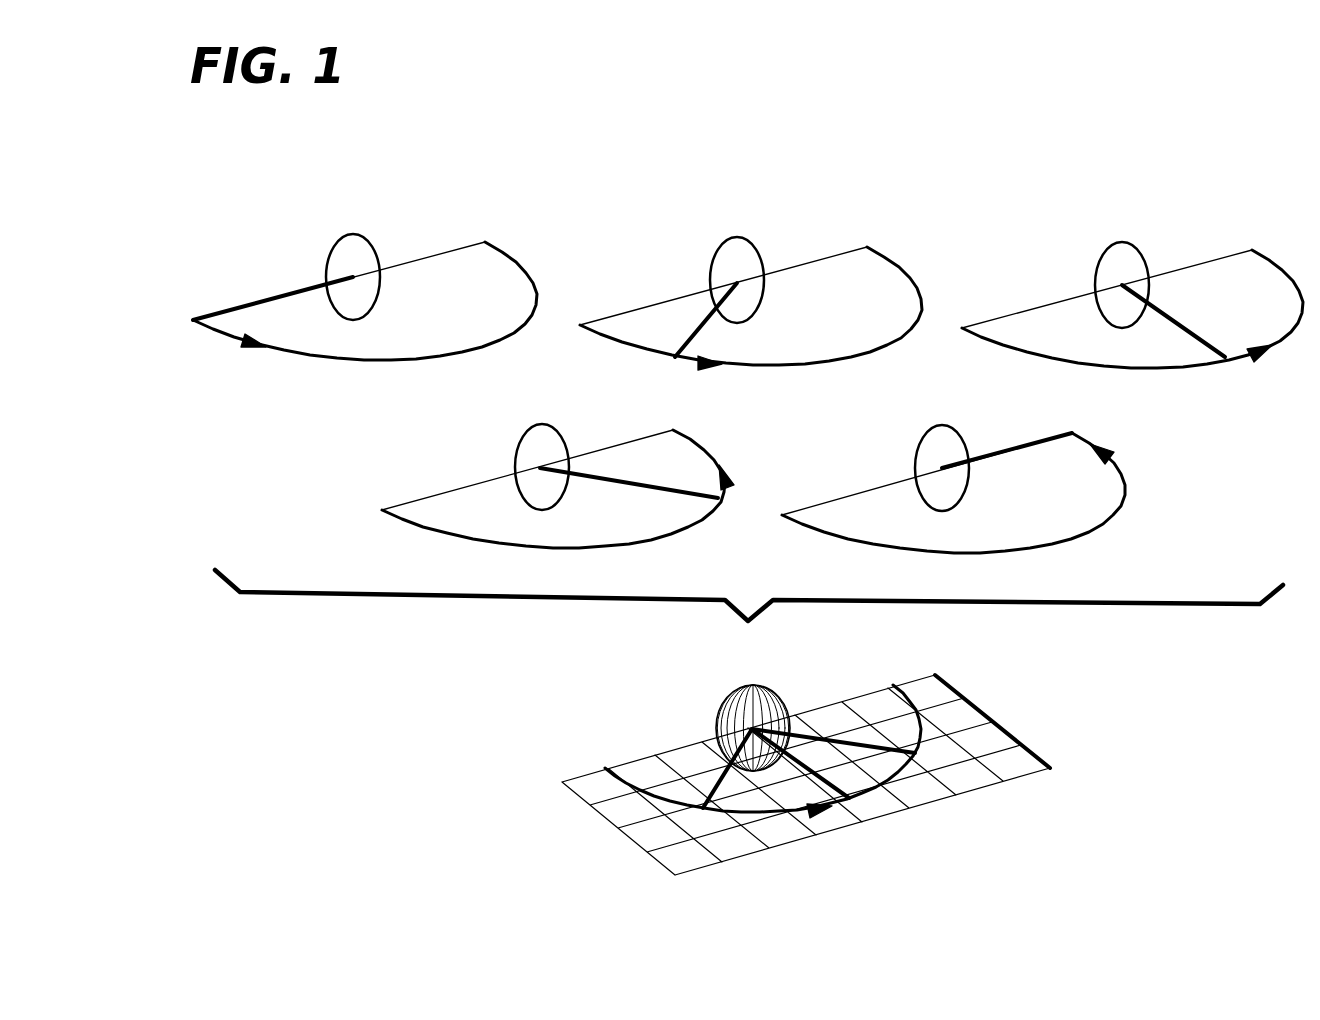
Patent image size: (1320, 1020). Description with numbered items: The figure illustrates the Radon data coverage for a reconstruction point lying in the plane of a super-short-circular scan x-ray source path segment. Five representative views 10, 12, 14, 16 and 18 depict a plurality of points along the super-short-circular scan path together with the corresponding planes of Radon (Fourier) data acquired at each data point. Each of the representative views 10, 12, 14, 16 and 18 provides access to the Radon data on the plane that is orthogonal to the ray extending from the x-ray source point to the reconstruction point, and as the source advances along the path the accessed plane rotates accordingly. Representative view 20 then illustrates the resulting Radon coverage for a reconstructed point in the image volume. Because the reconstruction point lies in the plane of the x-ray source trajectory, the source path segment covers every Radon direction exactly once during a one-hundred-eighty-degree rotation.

The representative view 10 is at (447, 227).
The representative view 12 is at (807, 234).
The representative view 14 is at (1155, 239).
The representative view 16 is at (691, 542).
The representative view 18 is at (1141, 464).
The representative view 20 is at (539, 813).